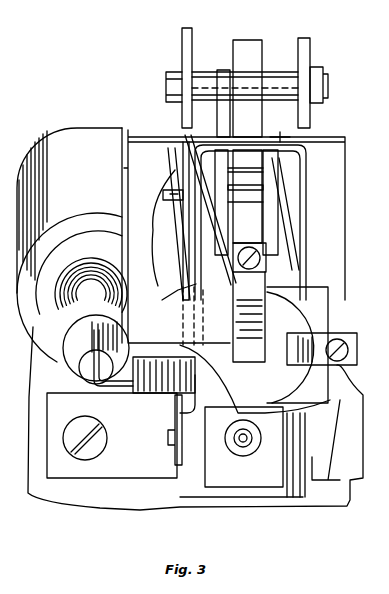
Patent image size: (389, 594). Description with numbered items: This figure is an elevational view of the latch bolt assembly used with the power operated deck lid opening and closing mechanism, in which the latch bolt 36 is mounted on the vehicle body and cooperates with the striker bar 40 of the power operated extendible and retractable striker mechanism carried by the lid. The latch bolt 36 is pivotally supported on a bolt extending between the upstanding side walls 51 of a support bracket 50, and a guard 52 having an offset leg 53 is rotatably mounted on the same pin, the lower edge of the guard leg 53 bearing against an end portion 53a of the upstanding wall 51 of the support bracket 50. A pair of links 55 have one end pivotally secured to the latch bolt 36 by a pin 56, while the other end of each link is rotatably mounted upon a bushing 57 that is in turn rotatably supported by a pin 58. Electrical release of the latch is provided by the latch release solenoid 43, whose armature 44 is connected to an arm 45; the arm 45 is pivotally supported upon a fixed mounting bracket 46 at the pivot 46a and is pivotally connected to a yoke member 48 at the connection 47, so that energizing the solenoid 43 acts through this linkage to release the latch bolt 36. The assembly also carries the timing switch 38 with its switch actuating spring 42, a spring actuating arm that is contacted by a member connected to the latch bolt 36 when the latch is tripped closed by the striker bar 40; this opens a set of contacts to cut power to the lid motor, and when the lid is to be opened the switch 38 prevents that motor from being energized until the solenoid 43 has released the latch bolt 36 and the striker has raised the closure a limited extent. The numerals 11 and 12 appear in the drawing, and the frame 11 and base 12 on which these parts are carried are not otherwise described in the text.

The frame 11 is at (184, 123).
The base plate 12 is at (102, 506).
The latch bolt 36 is at (246, 44).
The timing switch 38 is at (170, 270).
The striker bar 40 is at (326, 88).
The switch actuating spring 42 is at (230, 300).
The latch release solenoid 43 is at (78, 150).
The armature 44 is at (80, 348).
The arm 45 is at (124, 398).
The fixed mounting bracket 46 is at (165, 500).
The pivot of arm on mounting bracket 46a is at (172, 436).
The pivotal connection of arm to yoke 47 is at (212, 404).
The yoke member 48 is at (180, 288).
The support bracket 50 is at (290, 485).
The upstanding side walls 51 is at (305, 240).
The guard 52 is at (212, 96).
The offset leg 53 is at (223, 72).
The end portion of upstanding wall 53a is at (284, 135).
The links 55 is at (237, 184).
The pin 56 is at (298, 266).
The bushing 57 is at (230, 168).
The pin 58 is at (288, 166).